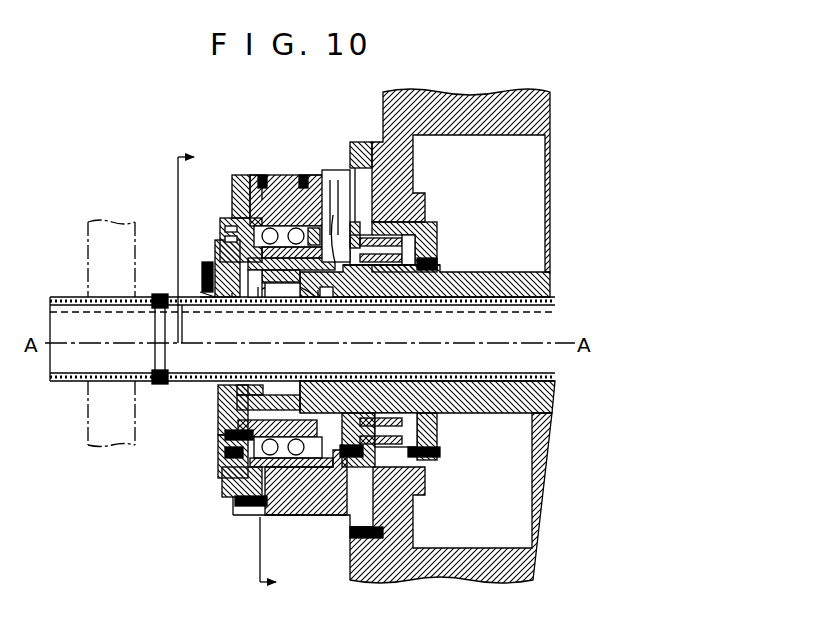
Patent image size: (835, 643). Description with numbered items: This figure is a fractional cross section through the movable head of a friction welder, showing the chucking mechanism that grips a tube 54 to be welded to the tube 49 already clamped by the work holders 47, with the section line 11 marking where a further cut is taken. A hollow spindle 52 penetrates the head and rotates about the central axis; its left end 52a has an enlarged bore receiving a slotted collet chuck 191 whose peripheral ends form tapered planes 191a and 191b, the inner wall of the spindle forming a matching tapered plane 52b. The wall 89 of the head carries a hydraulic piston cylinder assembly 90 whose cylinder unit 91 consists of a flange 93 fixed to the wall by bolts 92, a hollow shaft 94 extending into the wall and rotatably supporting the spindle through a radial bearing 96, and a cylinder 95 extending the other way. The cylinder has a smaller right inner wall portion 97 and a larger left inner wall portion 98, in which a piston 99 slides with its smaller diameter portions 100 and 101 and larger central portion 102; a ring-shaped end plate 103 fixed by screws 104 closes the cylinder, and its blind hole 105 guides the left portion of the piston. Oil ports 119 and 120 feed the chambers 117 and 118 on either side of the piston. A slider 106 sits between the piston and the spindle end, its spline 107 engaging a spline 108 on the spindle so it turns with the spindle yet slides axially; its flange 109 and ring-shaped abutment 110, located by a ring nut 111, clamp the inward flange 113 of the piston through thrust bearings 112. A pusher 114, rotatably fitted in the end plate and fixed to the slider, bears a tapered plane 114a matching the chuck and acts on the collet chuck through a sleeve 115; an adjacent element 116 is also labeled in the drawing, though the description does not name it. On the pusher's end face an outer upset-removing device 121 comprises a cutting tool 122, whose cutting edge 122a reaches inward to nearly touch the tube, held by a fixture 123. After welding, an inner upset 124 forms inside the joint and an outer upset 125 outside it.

The section line 11 is at (216, 369).
The work holder 47 is at (122, 447).
The tube 49 is at (67, 383).
The hollow spindle 52 is at (505, 282).
The left end of the spindle 52a is at (302, 386).
The tapered plane 52b is at (318, 290).
The tube 54 is at (515, 385).
The wall 89 is at (407, 168).
The hydraulic piston cylinder assembly 90 is at (303, 518).
The cylinder unit 91 is at (325, 517).
The bolt 92 is at (350, 533).
The flange 93 is at (362, 540).
The hollow shaft 94 is at (418, 228).
The cylinder 95 is at (280, 515).
The radial bearing 96 is at (391, 279).
The right inner wall portion 97 is at (389, 457).
The left inner wall portion 98 is at (238, 497).
The piston 99 is at (289, 178).
The left portion of the piston 100 is at (222, 447).
The right portion of the piston 101 is at (378, 457).
The central portion of the piston 102 is at (306, 483).
The end plate 103 is at (232, 188).
The screw 104 is at (237, 498).
The blind hole 105 is at (235, 475).
The slider 106 is at (240, 250).
The spline 107 is at (281, 291).
The spline 108 is at (303, 407).
The flange 109 is at (263, 232).
The ring-shaped abutment 110 is at (326, 220).
The ring nut 111 is at (348, 227).
The thrust bearing 112 is at (285, 216).
The flange 113 is at (291, 222).
The pusher 114 is at (225, 398).
The tapered plane 114a is at (232, 293).
The sleeve 115 is at (227, 455).
The seal 116 is at (225, 433).
The chamber 117 is at (250, 174).
The chamber 118 is at (308, 172).
The compressed oil port 119 is at (263, 177).
The compressed oil port 120 is at (312, 178).
The outer upset-removing device 121 is at (202, 292).
The cutting tool 122 is at (185, 308).
The cutting edge 122a is at (207, 298).
The fixture 123 is at (207, 273).
The inner upset 124 is at (157, 368).
The outer upset 125 is at (158, 383).
The collet chuck 191 is at (258, 287).
The tapered plane 191a is at (242, 293).
The tapered plane 191b is at (342, 282).